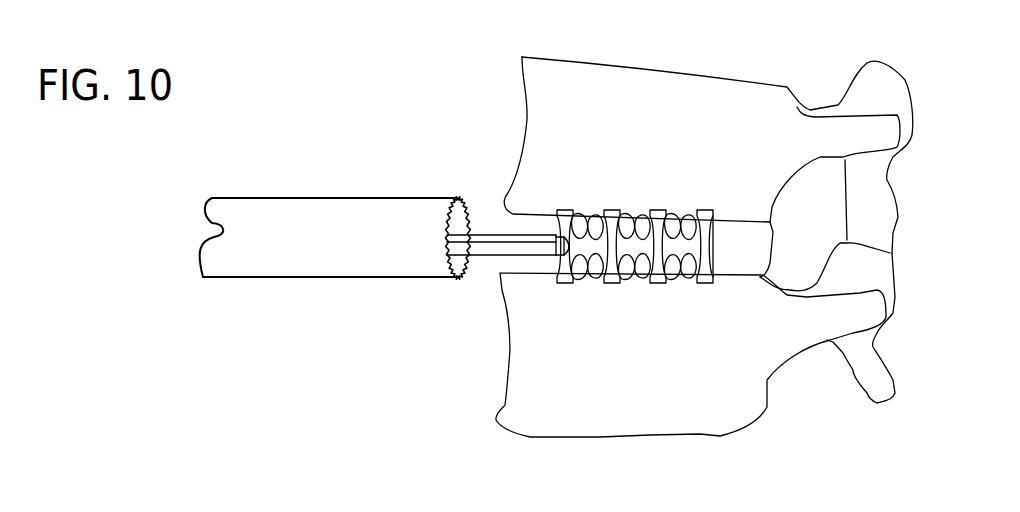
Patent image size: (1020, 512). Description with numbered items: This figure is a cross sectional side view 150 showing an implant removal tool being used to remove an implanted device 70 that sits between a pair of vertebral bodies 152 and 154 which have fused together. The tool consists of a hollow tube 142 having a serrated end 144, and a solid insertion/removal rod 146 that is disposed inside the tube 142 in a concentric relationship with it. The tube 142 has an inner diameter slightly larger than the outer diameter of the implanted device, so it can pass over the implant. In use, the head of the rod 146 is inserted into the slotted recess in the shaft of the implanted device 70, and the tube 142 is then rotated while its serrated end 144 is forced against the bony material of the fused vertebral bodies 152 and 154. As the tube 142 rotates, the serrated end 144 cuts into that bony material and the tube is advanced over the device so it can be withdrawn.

The fusion cage / intervertebral implant 70 is at (668, 242).
The hollow tube 142 is at (308, 252).
The serrated end 144 is at (466, 278).
The insertion/removal rod 146 is at (493, 232).
The cross sectional side view 150 is at (192, 207).
The vertebral body 152 is at (658, 117).
The vertebral body 154 is at (651, 402).